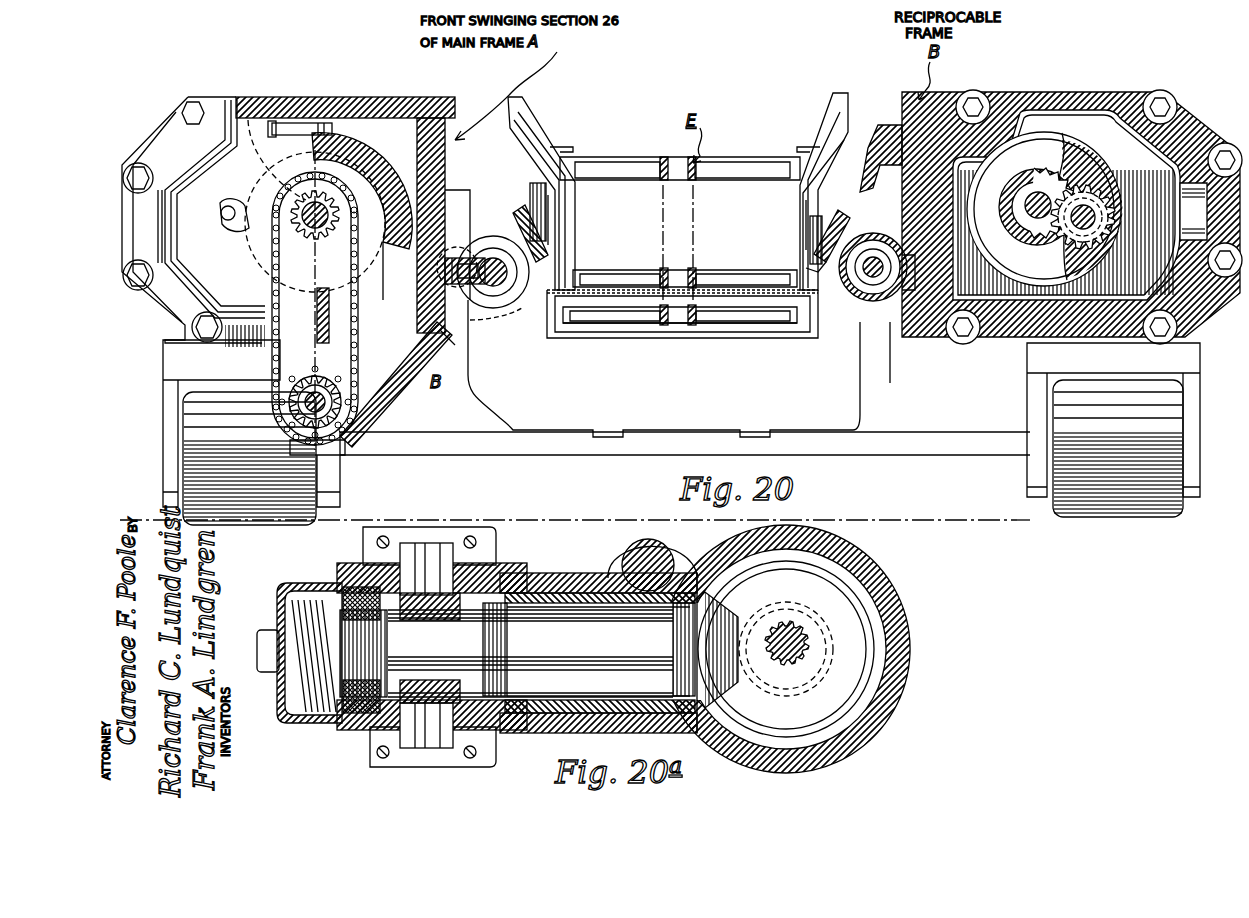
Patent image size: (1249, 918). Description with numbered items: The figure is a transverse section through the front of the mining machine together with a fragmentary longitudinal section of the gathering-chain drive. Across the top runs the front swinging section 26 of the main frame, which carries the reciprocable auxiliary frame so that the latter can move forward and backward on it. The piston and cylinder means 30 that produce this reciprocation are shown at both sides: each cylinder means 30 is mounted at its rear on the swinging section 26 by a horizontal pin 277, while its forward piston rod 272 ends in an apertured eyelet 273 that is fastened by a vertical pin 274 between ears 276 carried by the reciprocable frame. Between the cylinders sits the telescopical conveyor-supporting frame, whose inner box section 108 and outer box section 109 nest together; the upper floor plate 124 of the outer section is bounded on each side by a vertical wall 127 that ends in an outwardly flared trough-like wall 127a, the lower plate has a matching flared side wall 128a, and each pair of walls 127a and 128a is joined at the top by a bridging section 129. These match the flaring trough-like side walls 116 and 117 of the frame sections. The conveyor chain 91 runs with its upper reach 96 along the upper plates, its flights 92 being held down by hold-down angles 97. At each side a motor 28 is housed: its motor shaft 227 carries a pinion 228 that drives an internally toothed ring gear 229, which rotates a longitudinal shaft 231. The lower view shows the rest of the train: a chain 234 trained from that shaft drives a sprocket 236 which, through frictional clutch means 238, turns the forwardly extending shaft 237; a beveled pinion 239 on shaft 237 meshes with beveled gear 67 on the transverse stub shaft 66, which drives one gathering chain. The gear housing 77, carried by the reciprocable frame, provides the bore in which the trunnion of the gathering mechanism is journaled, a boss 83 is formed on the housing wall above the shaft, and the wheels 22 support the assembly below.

In FIG. 20, the wheel 22 is at (262, 478).
In FIG. 20, the front swinging section 26 is at (882, 340).
In FIG. 20, the motor 28 is at (177, 106).
In FIG. 20, the piston and cylinder means 30 is at (513, 310).
In FIG. 20A, the horizontal shaft 66 is at (810, 645).
In FIG. 20A, the beveled gear 67 is at (845, 668).
In FIG. 20A, the gear housing 77 is at (905, 616).
In FIG. 20A, the boss 83 is at (638, 548).
In FIG. 20, the conveyor chain 91 is at (698, 266).
In FIG. 20, the flights 92 is at (780, 282).
In FIG. 20, the upper reach 96 is at (656, 270).
In FIG. 20, the hold-down angles 97 is at (648, 322).
In FIG. 20, the box section 108 is at (548, 244).
In FIG. 20, the box section 109 is at (558, 212).
In FIG. 20, the trough-like side wall 116 is at (828, 112).
In FIG. 20, the trough-like side wall 117 is at (527, 113).
In FIG. 20, the upper floor plate 124 is at (745, 250).
In FIG. 20, the vertical wall 127 is at (556, 258).
In FIG. 20, the trough-like wall 127a is at (545, 196).
In FIG. 20, the outwardly flared side wall 128a is at (836, 240).
In FIG. 20, the bridging section 129 is at (520, 138).
In FIG. 20, the motor shaft 227 is at (1100, 216).
In FIG. 20, the pinion 228 is at (1112, 195).
In FIG. 20, the internally toothed ring gear 229 is at (1095, 178).
In FIG. 20, the longitudinal shaft 231 is at (292, 221).
In FIG. 20, the chain 234 is at (332, 312).
In FIG. 20A, the chain 234 is at (447, 716).
In FIG. 20, the sprocket 236 is at (283, 238).
In FIG. 20A, the sprocket 236 is at (433, 567).
In FIG. 20, the forwardly extending shaft 237 is at (347, 433).
In FIG. 20A, the forwardly extending shaft 237 is at (648, 644).
In FIG. 20A, the frictional clutch means 238 is at (331, 575).
In FIG. 20A, the beveled pinion 239 is at (712, 580).
In FIG. 20, the piston rod 272 is at (888, 250).
In FIG. 20, the apertured eyelet 273 is at (498, 340).
In FIG. 20, the vertical pin 274 is at (492, 248).
In FIG. 20, the ears 276 is at (482, 300).
In FIG. 20, the horizontal pin 277 is at (905, 300).